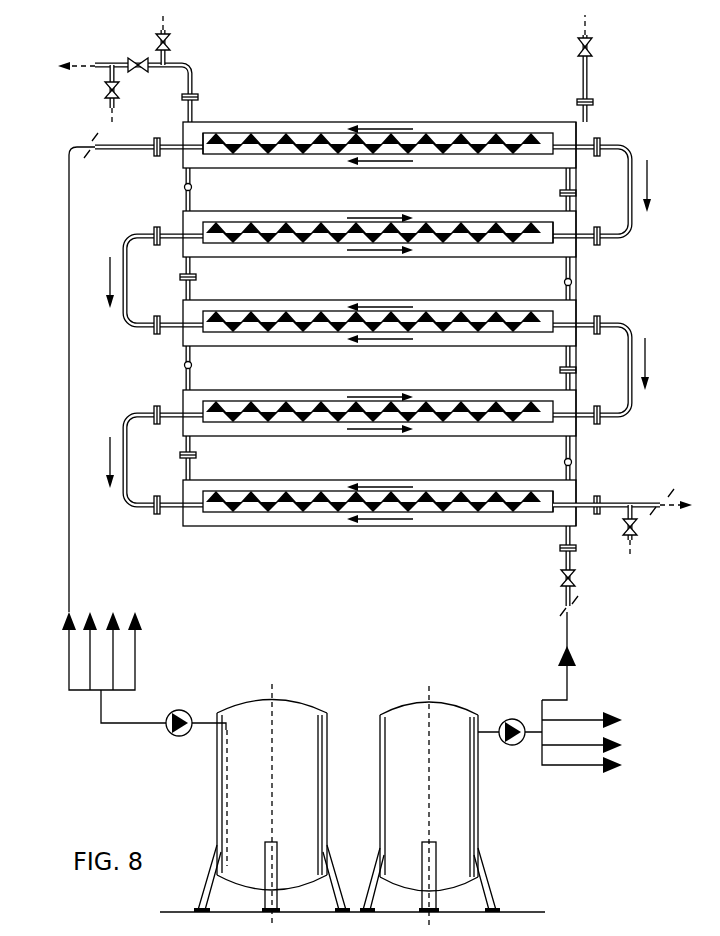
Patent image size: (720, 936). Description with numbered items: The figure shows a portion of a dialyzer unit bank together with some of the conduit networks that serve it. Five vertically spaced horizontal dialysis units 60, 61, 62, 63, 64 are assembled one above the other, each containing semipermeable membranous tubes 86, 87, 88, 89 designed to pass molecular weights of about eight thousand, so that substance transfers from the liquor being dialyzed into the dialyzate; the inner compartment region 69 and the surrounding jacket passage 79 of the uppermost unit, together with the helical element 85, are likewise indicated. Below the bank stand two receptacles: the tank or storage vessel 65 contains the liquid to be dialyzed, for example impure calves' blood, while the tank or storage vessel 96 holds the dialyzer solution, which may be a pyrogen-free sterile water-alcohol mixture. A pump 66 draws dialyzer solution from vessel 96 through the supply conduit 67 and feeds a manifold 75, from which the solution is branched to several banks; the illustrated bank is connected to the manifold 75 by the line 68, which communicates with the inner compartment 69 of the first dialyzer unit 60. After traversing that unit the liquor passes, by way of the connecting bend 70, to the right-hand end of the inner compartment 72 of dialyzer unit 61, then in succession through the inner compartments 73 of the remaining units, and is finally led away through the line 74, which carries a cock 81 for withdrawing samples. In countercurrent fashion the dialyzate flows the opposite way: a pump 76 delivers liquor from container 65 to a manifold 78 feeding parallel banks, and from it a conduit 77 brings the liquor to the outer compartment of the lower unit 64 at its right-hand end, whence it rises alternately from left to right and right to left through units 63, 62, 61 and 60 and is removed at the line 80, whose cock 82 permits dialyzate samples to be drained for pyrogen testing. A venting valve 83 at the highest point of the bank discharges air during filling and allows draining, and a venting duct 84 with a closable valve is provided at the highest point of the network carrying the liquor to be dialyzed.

The first dialyzer unit 60 is at (433, 122).
The dialyzer unit 61 is at (433, 211).
The dialyzer unit 62 is at (433, 300).
The dialyzer unit 63 is at (433, 390).
The lower dialyzer unit 64 is at (433, 480).
The tank or storage vessel 65 is at (445, 820).
The pump 66 is at (183, 712).
The supply conduit 67 is at (145, 723).
The line 68 is at (70, 400).
The inner compartment 69 is at (243, 141).
The connecting bend 70 is at (632, 163).
The inner compartment 72 is at (522, 232).
The inner compartment 73 is at (520, 500).
The line 74 is at (648, 497).
The manifold 75 is at (90, 650).
The pump 76 is at (510, 719).
The conduit 77 is at (568, 690).
The manifold 78 is at (622, 765).
The jacket flow passage 79 is at (373, 128).
The line 80 is at (182, 60).
The cock 81 is at (633, 515).
The cock 82 is at (109, 73).
The venting valve 83 is at (157, 59).
The venting duct 84 is at (587, 82).
The helical element 85 is at (305, 135).
The semipermeable tube 86 is at (305, 226).
The semipermeable tube 87 is at (305, 315).
The semipermeable tube 88 is at (305, 405).
The semipermeable tube 89 is at (305, 495).
The tank or storage vessel 96 is at (240, 805).